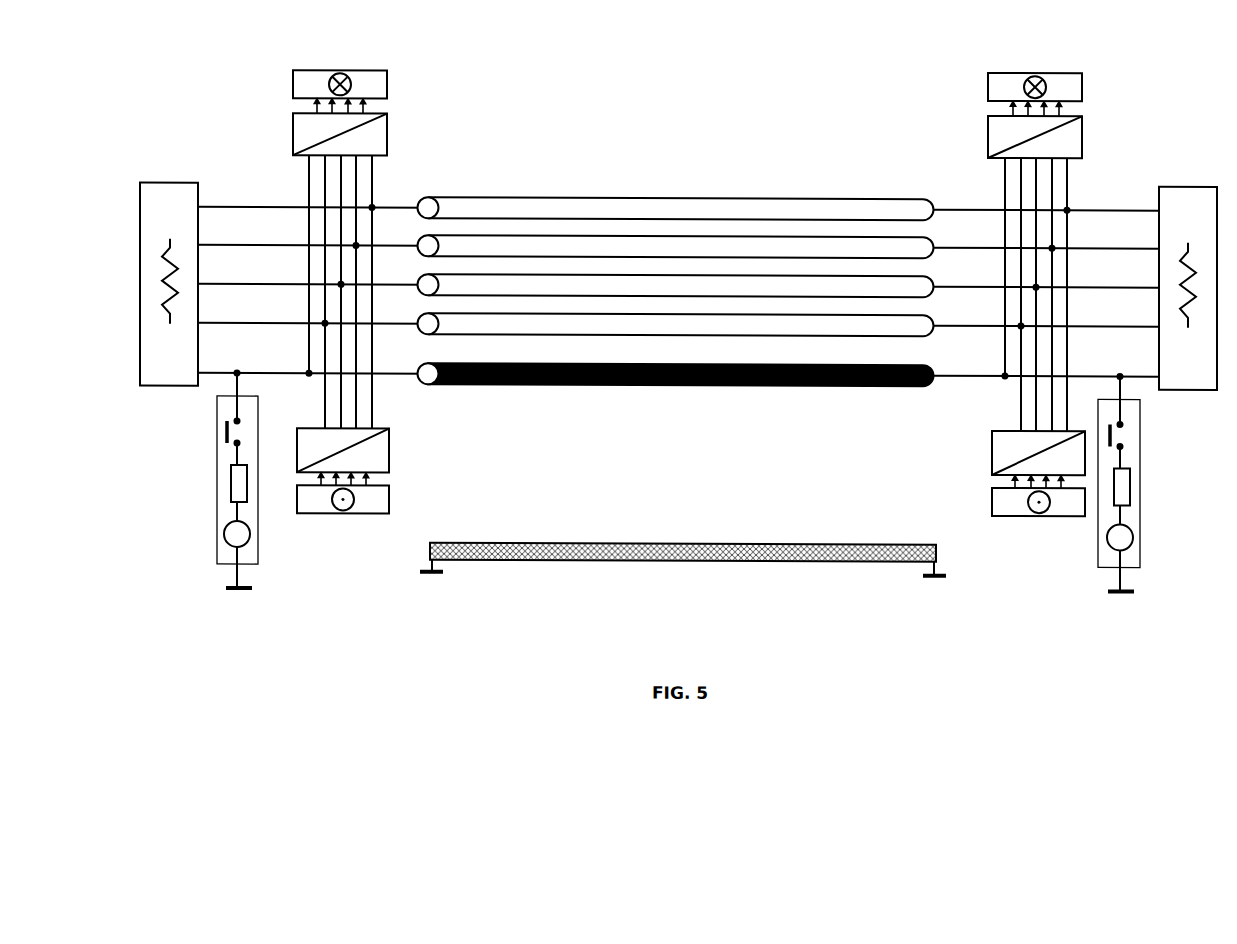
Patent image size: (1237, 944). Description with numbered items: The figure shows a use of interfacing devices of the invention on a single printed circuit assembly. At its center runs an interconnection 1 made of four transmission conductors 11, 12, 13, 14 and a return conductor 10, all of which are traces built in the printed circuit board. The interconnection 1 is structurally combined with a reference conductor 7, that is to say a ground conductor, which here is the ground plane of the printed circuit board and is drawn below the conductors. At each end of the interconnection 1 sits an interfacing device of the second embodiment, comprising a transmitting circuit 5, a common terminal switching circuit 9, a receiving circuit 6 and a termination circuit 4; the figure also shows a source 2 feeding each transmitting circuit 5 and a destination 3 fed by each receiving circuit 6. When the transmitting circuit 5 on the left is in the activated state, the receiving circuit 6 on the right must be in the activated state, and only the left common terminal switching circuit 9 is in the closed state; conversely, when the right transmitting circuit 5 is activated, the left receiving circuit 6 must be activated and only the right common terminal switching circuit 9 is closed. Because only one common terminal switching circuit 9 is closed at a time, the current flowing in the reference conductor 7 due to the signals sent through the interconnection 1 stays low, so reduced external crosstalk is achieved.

The interconnection 1 is at (648, 132).
The source 2 is at (393, 498).
The destination 3 is at (348, 62).
The termination circuit 4 is at (161, 172).
The transmitting circuit 5 is at (393, 448).
The receiving circuit 6 is at (395, 138).
The reference conductor 7 is at (753, 567).
The common terminal switching circuit 9 is at (208, 499).
The return conductor 10 is at (695, 390).
The transmission conductor 11 is at (928, 191).
The transmission conductor 12 is at (932, 232).
The transmission conductor 13 is at (932, 271).
The transmission conductor 14 is at (932, 311).